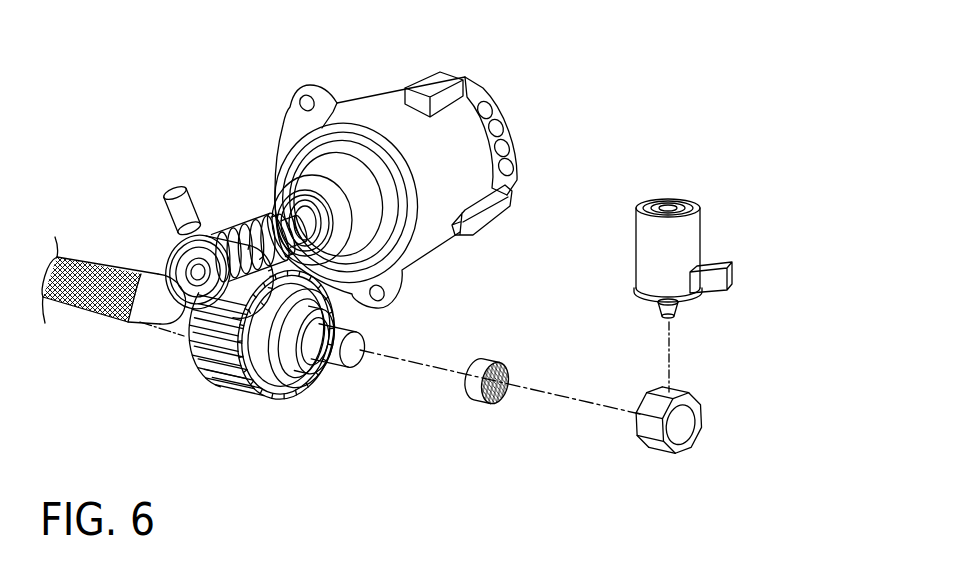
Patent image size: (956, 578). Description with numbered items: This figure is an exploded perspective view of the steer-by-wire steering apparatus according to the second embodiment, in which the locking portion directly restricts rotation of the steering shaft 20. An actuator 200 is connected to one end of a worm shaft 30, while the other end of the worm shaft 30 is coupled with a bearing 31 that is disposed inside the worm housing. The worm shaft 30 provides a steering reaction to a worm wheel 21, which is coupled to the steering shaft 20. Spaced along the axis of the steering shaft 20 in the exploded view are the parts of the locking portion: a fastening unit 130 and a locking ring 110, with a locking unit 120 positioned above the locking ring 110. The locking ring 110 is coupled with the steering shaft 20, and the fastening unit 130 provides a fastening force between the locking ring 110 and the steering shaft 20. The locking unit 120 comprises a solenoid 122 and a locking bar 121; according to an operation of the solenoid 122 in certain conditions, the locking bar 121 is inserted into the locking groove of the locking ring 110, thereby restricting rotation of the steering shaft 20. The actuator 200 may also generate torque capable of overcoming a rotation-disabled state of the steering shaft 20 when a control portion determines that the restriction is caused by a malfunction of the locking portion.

The actuator 200 is at (400, 86).
The worm shaft 30 is at (265, 217).
The bearing 31 is at (203, 230).
The worm wheel 21 is at (220, 392).
The steering shaft 20 is at (76, 305).
The fastening unit 130 is at (477, 403).
The locking ring 110 is at (647, 457).
The locking unit 120 is at (735, 259).
The locking bar 121 is at (675, 317).
The solenoid 122 is at (697, 245).